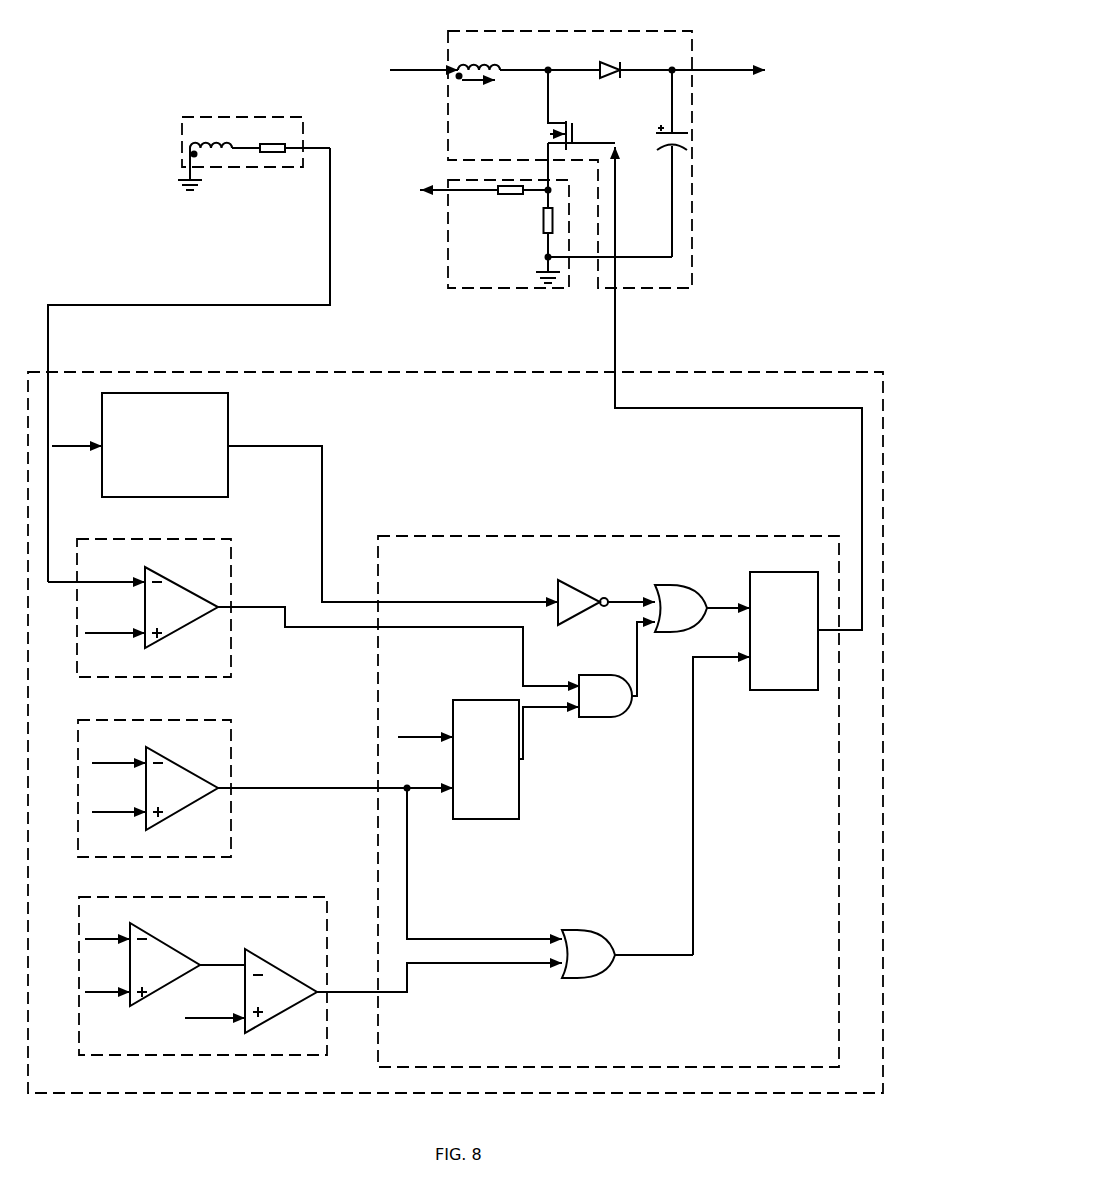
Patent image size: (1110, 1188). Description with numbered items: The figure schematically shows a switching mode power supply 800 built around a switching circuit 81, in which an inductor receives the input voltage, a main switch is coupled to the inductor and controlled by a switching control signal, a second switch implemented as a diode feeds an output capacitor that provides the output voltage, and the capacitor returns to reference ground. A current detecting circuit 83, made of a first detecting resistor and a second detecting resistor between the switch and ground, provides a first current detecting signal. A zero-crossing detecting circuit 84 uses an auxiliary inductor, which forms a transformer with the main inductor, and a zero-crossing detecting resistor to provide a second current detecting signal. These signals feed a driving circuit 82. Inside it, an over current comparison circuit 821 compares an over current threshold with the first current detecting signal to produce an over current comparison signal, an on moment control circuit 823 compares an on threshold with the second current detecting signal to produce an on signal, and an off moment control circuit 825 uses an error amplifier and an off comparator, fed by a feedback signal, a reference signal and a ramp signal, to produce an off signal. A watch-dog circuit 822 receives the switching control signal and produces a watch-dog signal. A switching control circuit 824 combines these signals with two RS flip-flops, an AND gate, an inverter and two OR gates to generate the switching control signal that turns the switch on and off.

The switching mode power supply 800 is at (168, 60).
The switching circuit 81 is at (555, 31).
The driving circuit 82 is at (852, 371).
The current detecting circuit 83 is at (448, 289).
The zero-crossing detecting circuit 84 is at (262, 116).
The over current comparison circuit 821 is at (165, 720).
The watch-dog circuit 822 is at (231, 393).
The on moment control circuit 823 is at (158, 539).
The switching control circuit 824 is at (688, 536).
The off moment control circuit 825 is at (185, 897).